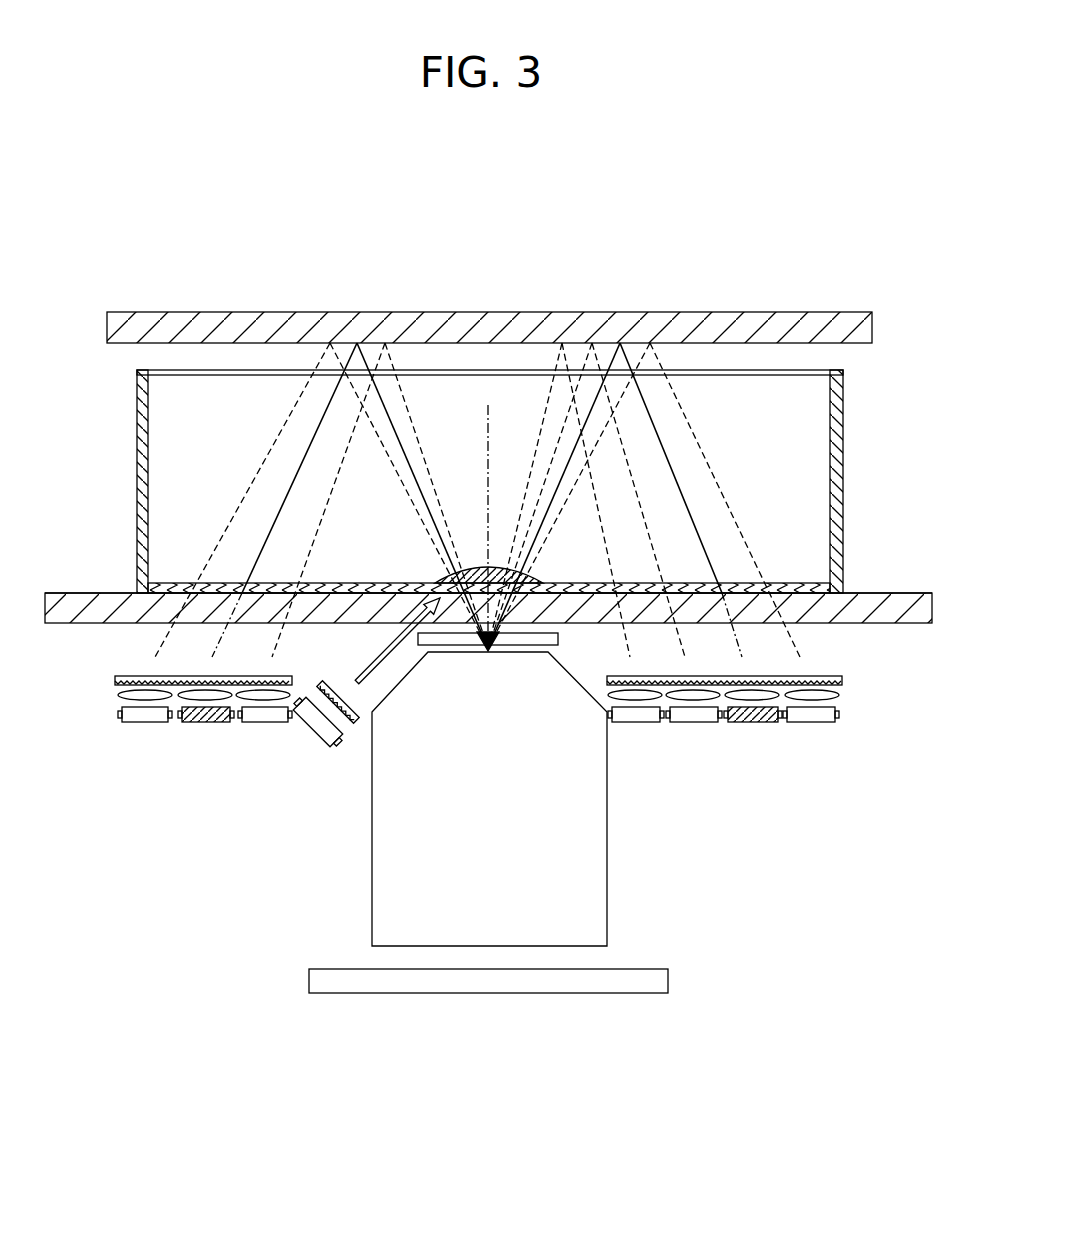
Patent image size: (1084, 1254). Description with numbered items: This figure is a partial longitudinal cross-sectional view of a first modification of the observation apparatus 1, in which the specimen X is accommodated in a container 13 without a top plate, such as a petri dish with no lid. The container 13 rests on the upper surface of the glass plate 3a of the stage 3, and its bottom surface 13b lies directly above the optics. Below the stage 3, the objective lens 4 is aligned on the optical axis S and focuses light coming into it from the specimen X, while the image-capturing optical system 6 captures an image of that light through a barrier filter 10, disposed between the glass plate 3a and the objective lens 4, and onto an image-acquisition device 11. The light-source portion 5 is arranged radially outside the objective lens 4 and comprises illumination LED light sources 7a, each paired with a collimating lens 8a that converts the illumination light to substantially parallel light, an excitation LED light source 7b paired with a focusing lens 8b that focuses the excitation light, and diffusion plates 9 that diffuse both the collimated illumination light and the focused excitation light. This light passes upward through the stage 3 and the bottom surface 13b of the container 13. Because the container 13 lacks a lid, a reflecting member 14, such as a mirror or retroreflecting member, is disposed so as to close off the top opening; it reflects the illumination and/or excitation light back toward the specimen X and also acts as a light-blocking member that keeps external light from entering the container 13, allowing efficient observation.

The observation apparatus 1 is at (92, 205).
The stage 3 is at (61, 580).
The glass plate 3a is at (97, 593).
The objective lens 4 is at (607, 888).
The light-source portion 5 is at (508, 766).
The image-capturing optical system 6 is at (535, 799).
The LED light sources 7a is at (145, 722).
The LED light source 7b is at (310, 732).
The collimating lenses 8a is at (118, 697).
The focusing lens 8b is at (350, 727).
The diffusion plates 9 is at (128, 676).
The barrier filter 10 is at (528, 647).
The image-acquisition device 11 is at (497, 995).
The container 13 is at (551, 481).
The bottom surface 13b is at (788, 583).
The reflecting member 14 is at (252, 312).
The optical axis S is at (488, 510).
The specimen X is at (487, 570).